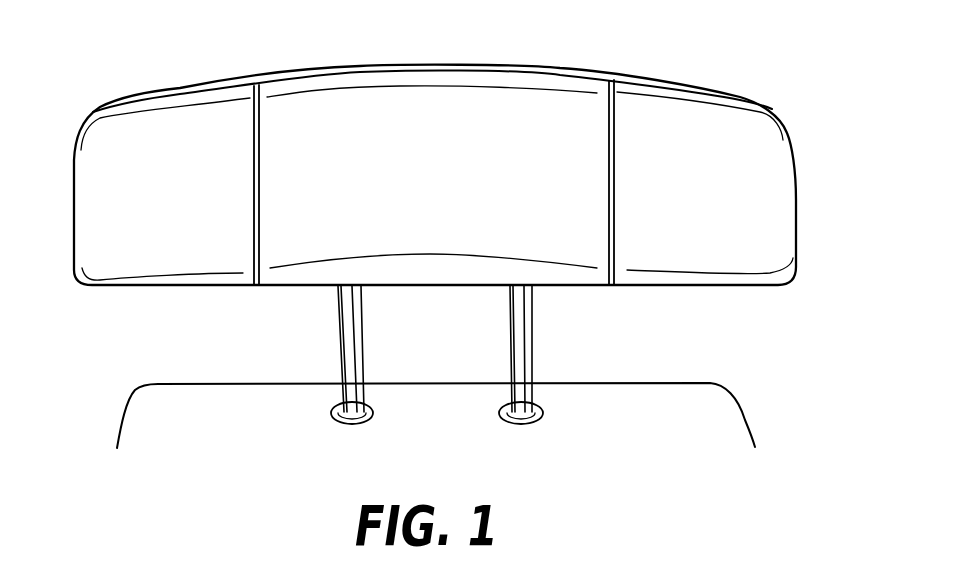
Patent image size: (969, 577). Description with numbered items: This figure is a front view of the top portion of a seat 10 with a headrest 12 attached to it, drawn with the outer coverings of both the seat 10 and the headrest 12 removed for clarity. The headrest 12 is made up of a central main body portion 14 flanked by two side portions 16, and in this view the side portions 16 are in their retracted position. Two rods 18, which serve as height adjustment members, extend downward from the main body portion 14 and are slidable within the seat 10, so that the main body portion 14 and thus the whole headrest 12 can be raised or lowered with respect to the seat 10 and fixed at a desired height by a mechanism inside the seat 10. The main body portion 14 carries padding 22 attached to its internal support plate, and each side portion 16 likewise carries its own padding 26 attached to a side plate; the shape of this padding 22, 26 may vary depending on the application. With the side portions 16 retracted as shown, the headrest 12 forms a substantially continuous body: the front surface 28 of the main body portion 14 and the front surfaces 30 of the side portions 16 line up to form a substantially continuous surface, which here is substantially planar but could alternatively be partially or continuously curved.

The seat 10 is at (776, 412).
The headrest 12 is at (804, 191).
The main body portion 14 is at (417, 272).
The side portions 16 is at (110, 219).
The rods 18 is at (347, 340).
The padding 22 is at (453, 100).
The padding 26 is at (180, 128).
The front surface 28 is at (293, 273).
The front surfaces 30 is at (188, 262).